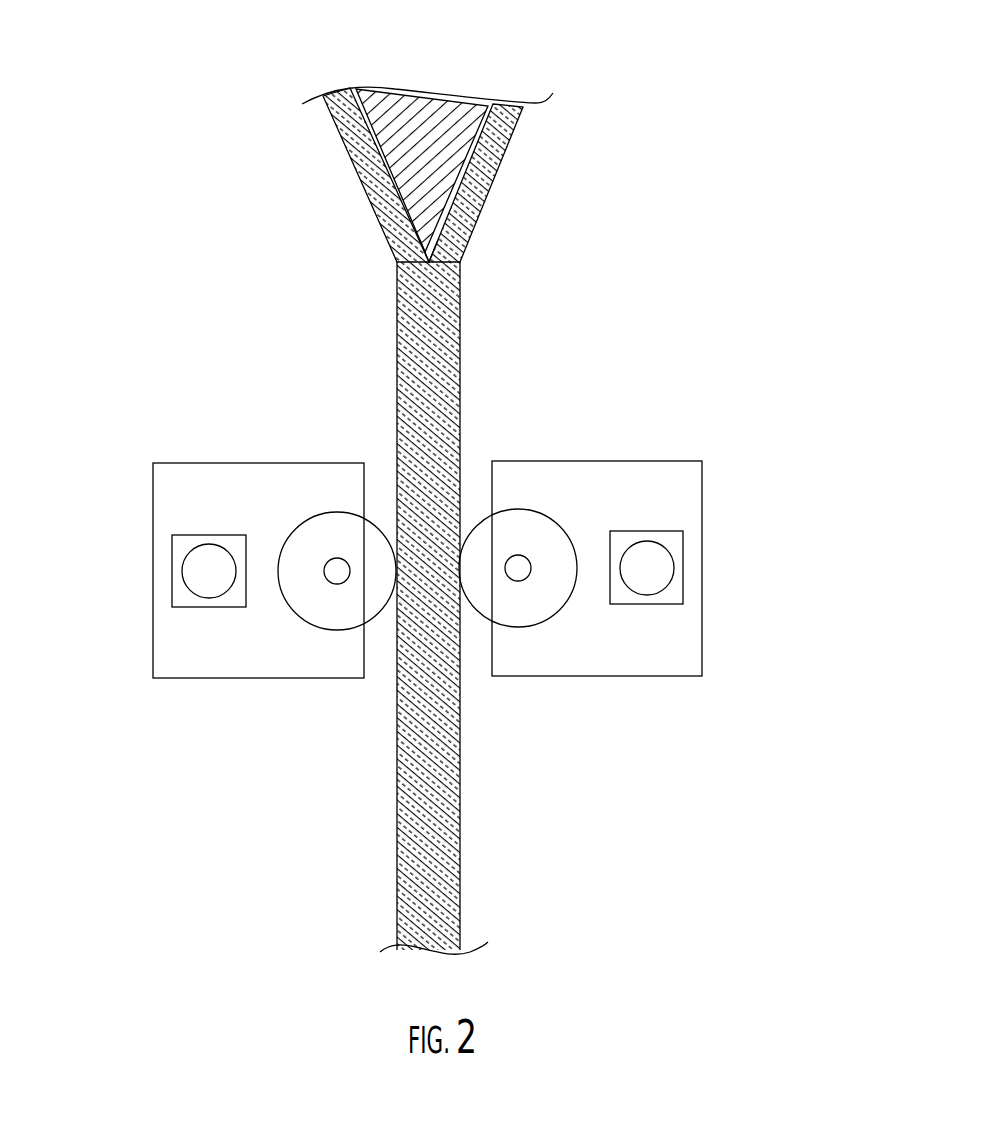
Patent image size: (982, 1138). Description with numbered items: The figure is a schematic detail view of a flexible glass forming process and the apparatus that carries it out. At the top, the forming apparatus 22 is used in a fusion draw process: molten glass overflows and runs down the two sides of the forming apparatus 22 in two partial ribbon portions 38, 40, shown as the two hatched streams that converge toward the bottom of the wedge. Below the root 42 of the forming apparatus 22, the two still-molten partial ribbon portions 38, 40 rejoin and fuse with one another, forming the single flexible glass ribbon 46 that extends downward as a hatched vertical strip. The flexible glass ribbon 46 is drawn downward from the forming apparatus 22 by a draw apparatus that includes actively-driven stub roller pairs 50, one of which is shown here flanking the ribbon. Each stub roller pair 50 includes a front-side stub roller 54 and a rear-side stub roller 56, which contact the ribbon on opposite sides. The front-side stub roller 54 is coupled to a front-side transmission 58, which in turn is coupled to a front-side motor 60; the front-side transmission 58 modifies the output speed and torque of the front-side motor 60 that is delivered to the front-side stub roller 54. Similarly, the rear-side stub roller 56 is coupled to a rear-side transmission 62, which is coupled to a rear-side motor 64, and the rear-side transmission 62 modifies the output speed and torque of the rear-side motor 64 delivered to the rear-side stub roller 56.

The forming apparatus 22 is at (467, 151).
The partial ribbon portion 38 is at (357, 175).
The partial ribbon portion 40 is at (496, 177).
The root 42 is at (430, 250).
The flexible glass ribbon 46 is at (472, 383).
The stub roller pair 50 is at (435, 510).
The front-side stub roller 54 is at (527, 510).
The rear-side stub roller 56 is at (330, 510).
The front-side transmission 58 is at (623, 461).
The front-side motor 60 is at (675, 568).
The rear-side transmission 62 is at (257, 463).
The rear-side motor 64 is at (182, 570).